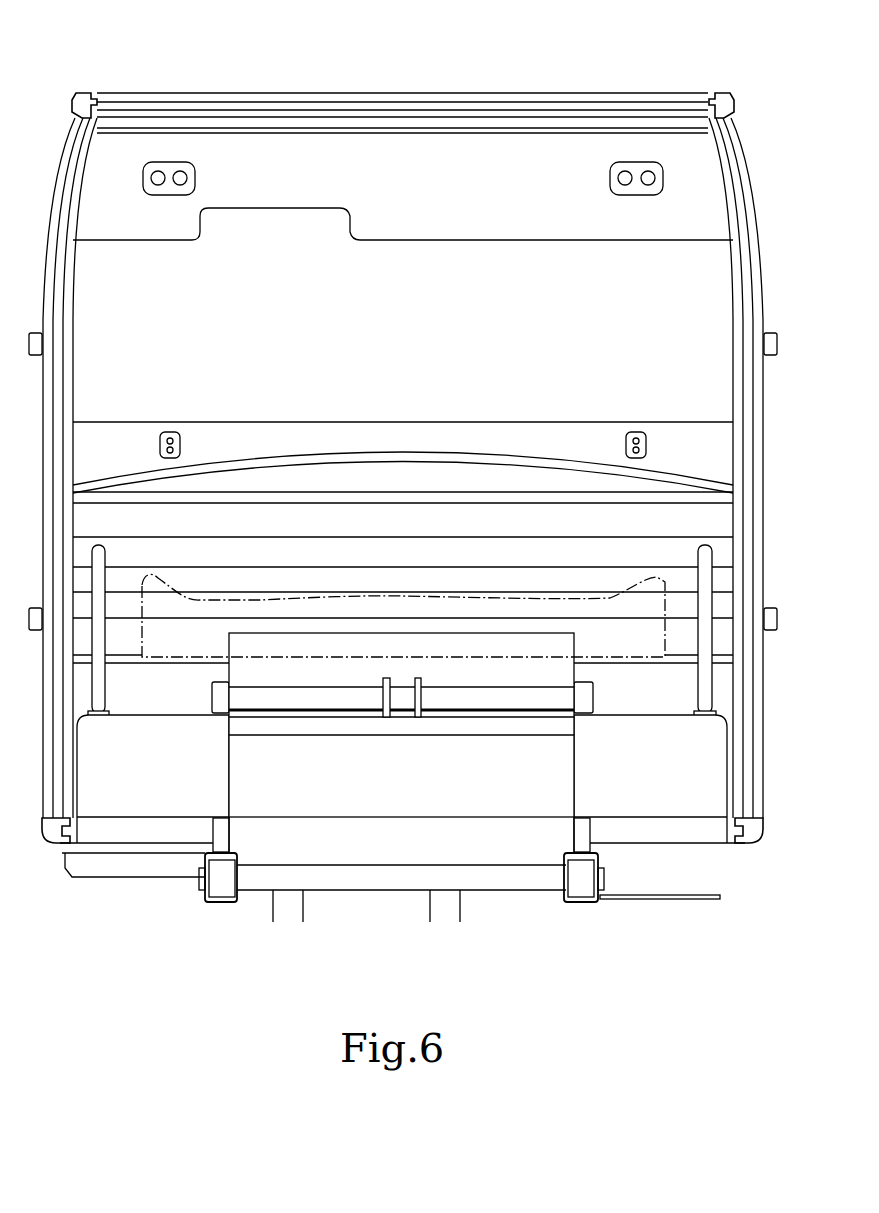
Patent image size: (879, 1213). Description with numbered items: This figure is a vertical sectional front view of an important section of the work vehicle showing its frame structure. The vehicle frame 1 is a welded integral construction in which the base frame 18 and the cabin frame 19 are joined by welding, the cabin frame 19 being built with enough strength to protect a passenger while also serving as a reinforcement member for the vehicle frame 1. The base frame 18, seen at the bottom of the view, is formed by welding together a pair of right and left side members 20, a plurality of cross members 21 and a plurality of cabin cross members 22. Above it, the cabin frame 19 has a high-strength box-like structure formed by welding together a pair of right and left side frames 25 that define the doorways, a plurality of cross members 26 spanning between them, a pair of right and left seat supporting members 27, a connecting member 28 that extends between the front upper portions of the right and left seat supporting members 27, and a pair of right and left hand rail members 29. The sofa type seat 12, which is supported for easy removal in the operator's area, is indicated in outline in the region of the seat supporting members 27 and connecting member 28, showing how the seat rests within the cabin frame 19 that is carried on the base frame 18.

The vehicle frame 1 is at (205, 943).
The sofa type seat 12 is at (392, 597).
The base frame 18 is at (580, 902).
The cabin frame 19 is at (80, 92).
The side member 20 is at (230, 835).
The cross member 21 is at (372, 885).
The cabin cross member 22 is at (140, 838).
The side frame 25 is at (45, 840).
The cross member 26 is at (440, 230).
The seat supporting member 27 is at (172, 714).
The connecting member 28 is at (338, 733).
The hand rail member 29 is at (106, 556).